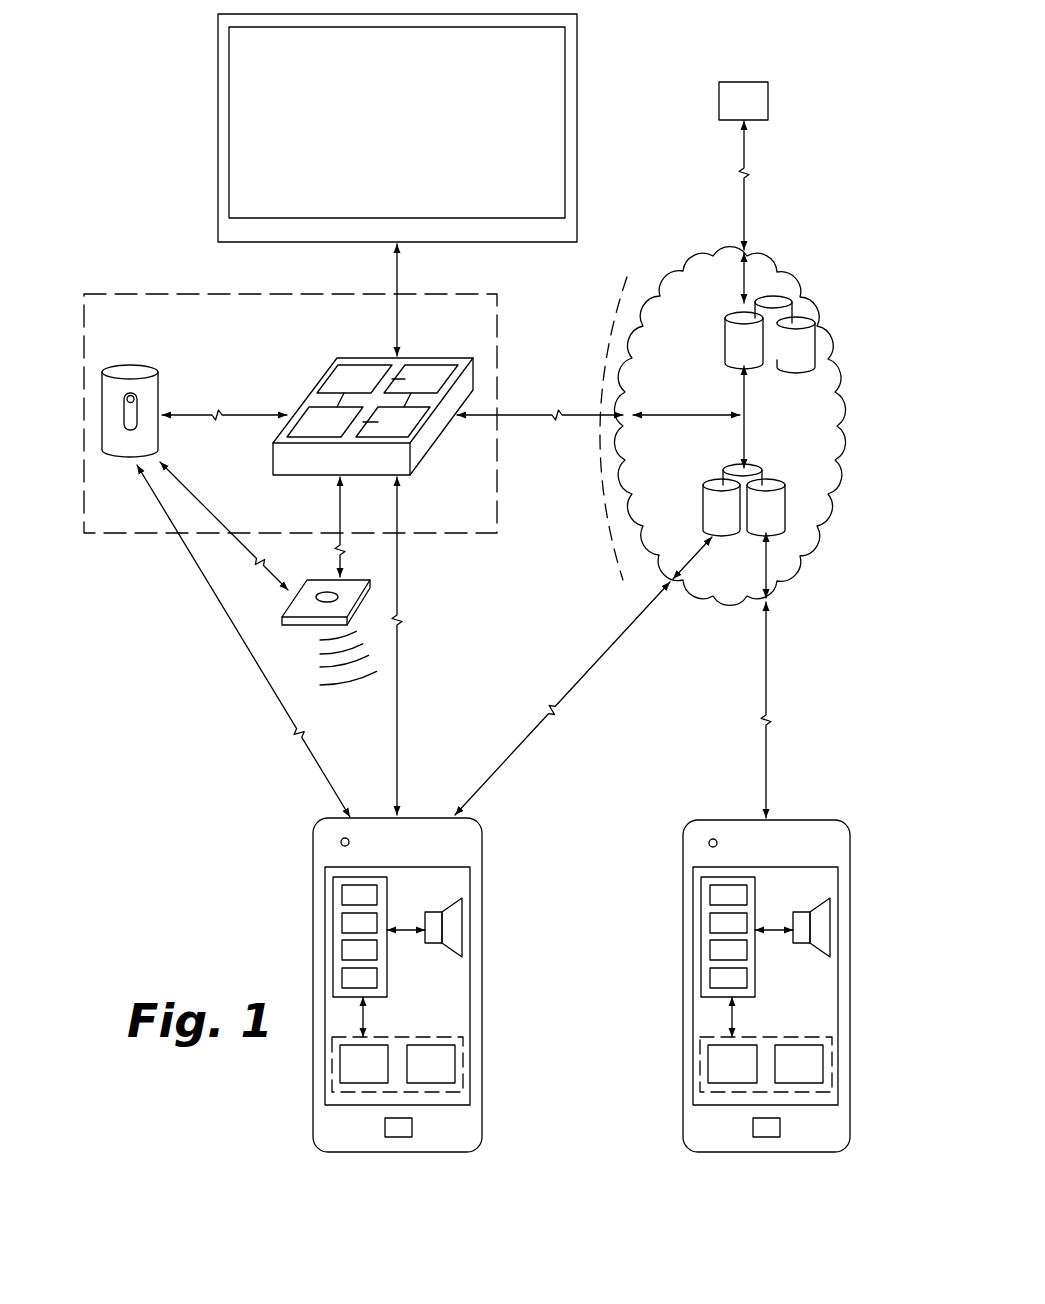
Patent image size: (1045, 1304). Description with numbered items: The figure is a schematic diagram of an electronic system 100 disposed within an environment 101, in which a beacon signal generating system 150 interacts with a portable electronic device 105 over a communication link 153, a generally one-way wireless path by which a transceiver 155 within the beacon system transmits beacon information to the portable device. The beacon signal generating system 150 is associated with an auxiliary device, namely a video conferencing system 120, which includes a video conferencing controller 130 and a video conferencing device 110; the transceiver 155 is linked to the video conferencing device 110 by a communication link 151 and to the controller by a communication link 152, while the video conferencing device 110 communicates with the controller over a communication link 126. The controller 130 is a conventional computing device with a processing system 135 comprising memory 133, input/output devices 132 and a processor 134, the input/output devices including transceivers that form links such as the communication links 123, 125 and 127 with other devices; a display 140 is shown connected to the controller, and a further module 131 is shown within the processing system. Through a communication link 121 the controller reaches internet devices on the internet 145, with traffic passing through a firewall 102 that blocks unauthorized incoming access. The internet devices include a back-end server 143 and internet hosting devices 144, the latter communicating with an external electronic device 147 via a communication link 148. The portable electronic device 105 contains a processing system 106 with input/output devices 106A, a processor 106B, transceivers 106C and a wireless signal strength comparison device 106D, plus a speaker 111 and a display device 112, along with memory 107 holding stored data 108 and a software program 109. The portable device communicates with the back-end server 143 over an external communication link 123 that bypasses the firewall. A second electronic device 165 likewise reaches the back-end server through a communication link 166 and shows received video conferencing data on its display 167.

The electronic system 100 is at (667, 27).
The environment 101 is at (173, 879).
The firewall 102 is at (608, 528).
The portable electronic device 105 is at (274, 1104).
The processing system 106 is at (345, 937).
The input/output (I/O) devices 106A is at (342, 893).
The processor 106B is at (342, 921).
The transceivers 106C is at (342, 948).
The wireless signal strength comparison device 106D is at (342, 977).
The memory 107 is at (398, 1050).
The stored data 108 is at (380, 1075).
The software program 109 is at (447, 1075).
The video conferencing device 110 is at (148, 457).
The speaker 111 is at (457, 904).
The display device 112 is at (393, 867).
The video conferencing system 120 is at (165, 294).
The communication link 121 is at (530, 410).
The external communication link 123 is at (588, 669).
The communication link 125 is at (400, 565).
The communication link 126 is at (190, 410).
The communication link 127 is at (202, 578).
The video conferencing controller 130 is at (362, 392).
The module 131 is at (435, 390).
The input/output (I/O) devices 132 is at (368, 390).
The memory 133 is at (407, 433).
The processor 134 is at (339, 433).
The processing system 135 is at (440, 357).
The display 140 is at (415, 124).
The back-end server 143 is at (773, 478).
The internet hosting devices 144 is at (725, 343).
The internet 145 is at (710, 254).
The external electronic device 147 is at (760, 112).
The communication link 148 is at (752, 206).
The beacon signal generating system 150 is at (321, 607).
The communication link 151 is at (205, 502).
The communication link 152 is at (340, 516).
The communication link 153 is at (358, 678).
The transceiver 155 is at (293, 627).
The second electronic device 165 is at (683, 993).
The communication link 166 is at (768, 698).
The display 167 is at (760, 867).